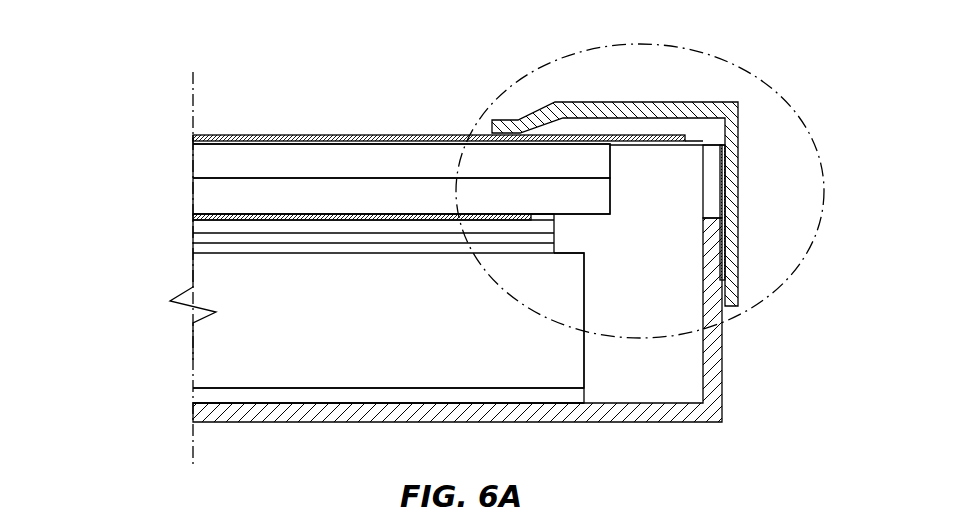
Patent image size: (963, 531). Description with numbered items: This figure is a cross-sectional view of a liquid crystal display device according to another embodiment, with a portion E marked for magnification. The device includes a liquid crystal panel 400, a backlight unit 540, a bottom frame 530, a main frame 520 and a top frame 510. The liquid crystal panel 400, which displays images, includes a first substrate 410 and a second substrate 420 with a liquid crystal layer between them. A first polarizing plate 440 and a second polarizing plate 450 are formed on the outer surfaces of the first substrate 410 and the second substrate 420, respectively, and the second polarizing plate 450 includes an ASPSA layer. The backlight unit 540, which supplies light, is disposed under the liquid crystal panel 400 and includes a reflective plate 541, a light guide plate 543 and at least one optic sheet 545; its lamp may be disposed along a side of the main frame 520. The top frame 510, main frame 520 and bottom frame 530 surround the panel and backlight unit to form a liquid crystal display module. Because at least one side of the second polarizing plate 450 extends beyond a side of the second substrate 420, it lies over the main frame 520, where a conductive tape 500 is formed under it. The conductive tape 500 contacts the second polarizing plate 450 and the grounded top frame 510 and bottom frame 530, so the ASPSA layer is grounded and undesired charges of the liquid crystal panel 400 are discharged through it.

The liquid crystal panel 400 is at (82, 133).
The first substrate 410 is at (208, 198).
The second substrate 420 is at (208, 162).
The first polarizing plate 440 is at (195, 217).
The second polarizing plate 450 is at (258, 135).
The conductive tape 500 is at (702, 137).
The top frame 510 is at (738, 157).
The main frame 520 is at (690, 323).
The bottom frame 530 is at (713, 372).
The backlight unit 540 is at (82, 242).
The reflective plate 541 is at (205, 396).
The light guide plate 543 is at (208, 352).
The optic sheet 545 is at (193, 245).
The portion E is at (785, 98).